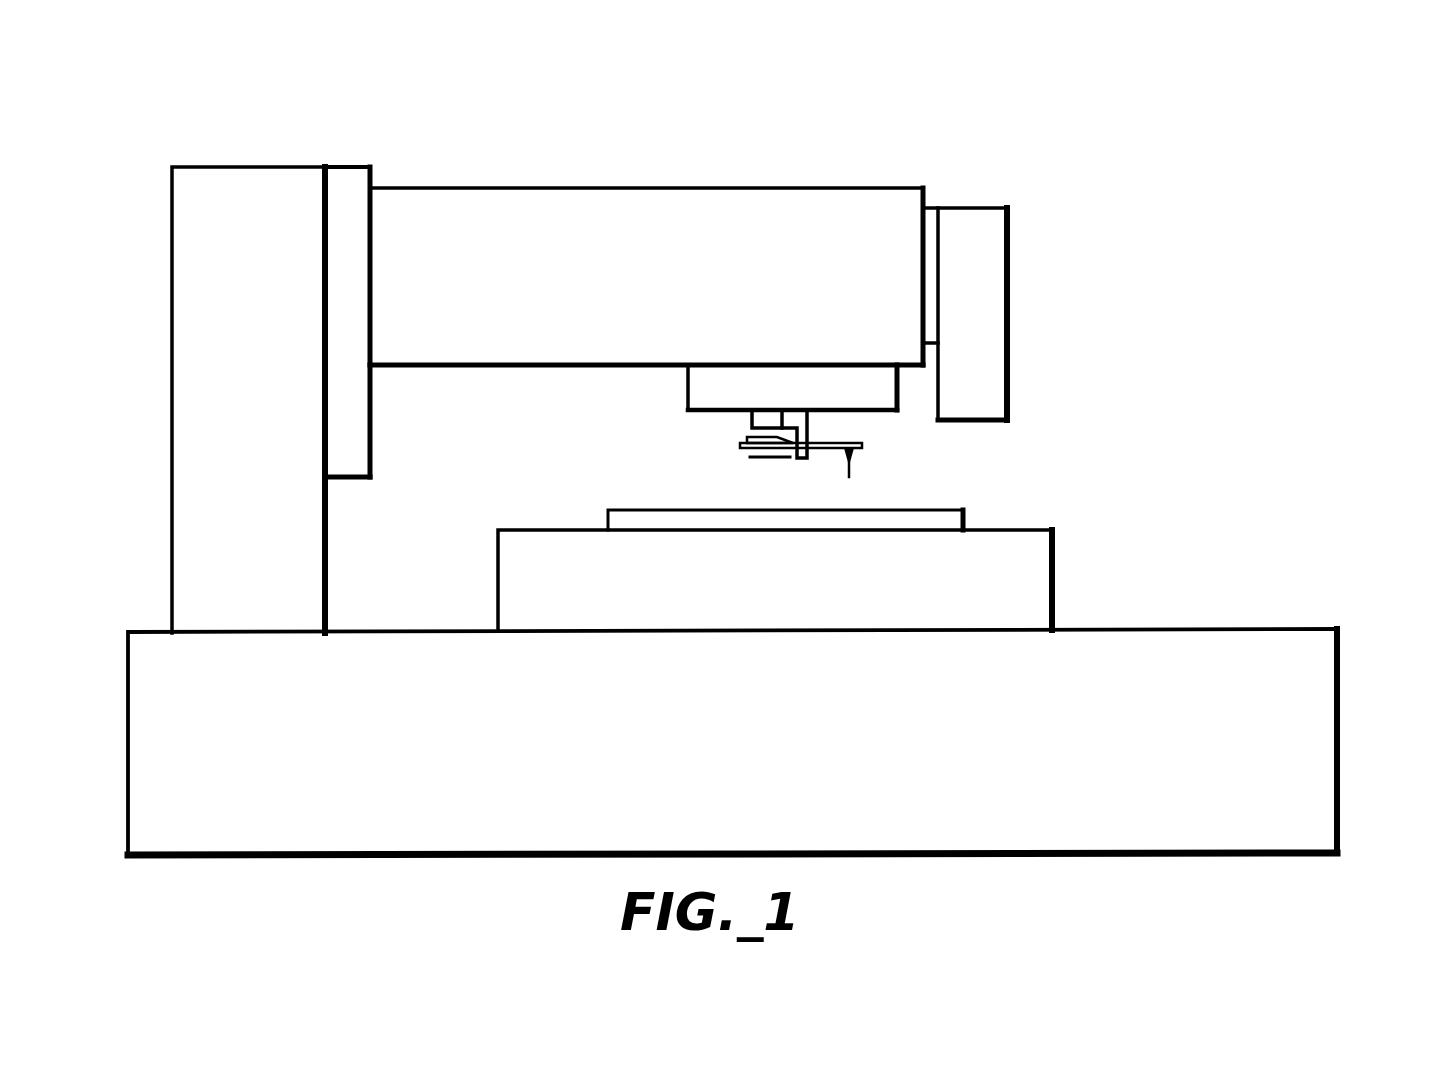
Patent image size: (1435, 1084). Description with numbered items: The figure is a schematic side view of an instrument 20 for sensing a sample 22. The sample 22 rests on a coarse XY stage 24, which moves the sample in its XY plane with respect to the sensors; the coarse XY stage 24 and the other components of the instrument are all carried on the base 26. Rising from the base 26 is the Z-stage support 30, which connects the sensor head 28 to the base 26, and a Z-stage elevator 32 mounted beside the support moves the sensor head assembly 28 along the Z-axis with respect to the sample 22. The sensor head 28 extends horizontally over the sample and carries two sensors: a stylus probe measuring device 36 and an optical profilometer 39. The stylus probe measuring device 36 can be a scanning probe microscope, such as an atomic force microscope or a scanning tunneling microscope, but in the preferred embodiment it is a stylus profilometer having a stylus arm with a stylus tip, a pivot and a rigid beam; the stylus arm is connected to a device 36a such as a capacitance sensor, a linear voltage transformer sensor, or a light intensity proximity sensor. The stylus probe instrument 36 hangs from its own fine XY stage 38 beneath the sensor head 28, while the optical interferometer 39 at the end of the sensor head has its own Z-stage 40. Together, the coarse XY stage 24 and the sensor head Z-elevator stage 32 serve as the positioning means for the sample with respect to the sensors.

The instrument 20 is at (461, 138).
The sample 22 is at (713, 505).
The coarse XY stage 24 is at (1037, 587).
The base 26 is at (1320, 745).
The sensor head 28 is at (639, 188).
The Z-stage support 30 is at (183, 345).
The Z-stage elevator 32 is at (348, 182).
The stylus probe measuring device 36 is at (880, 418).
The device 36a is at (752, 418).
The fine XY stage 38 is at (703, 382).
The optical profilometer 39 is at (1012, 285).
The Z-stage 40 is at (930, 204).